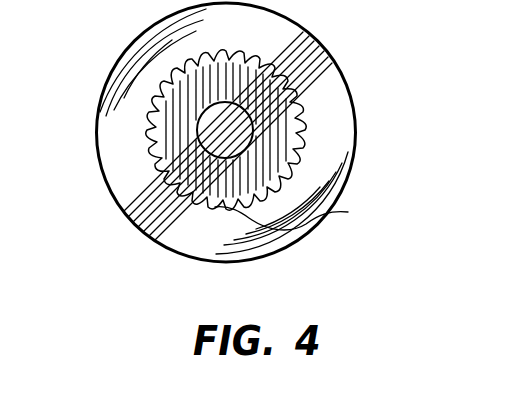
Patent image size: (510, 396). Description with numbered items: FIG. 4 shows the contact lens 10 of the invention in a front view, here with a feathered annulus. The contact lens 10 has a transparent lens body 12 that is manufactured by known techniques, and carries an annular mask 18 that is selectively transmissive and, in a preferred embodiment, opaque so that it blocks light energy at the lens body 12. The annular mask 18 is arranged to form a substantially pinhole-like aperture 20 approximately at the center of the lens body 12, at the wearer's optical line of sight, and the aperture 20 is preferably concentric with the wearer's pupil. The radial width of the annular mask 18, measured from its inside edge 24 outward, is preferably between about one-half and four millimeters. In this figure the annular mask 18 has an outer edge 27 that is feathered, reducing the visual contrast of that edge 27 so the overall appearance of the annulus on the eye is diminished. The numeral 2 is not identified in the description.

The contact lens 10 is at (373, 85).
The lens body 12 is at (113, 158).
The wrapped band 2 is at (320, 178).
The annular mask 18 is at (348, 212).
The inside edge 24 is at (268, 125).
The outer edge 27 is at (142, 173).
The aperture 20 is at (204, 124).